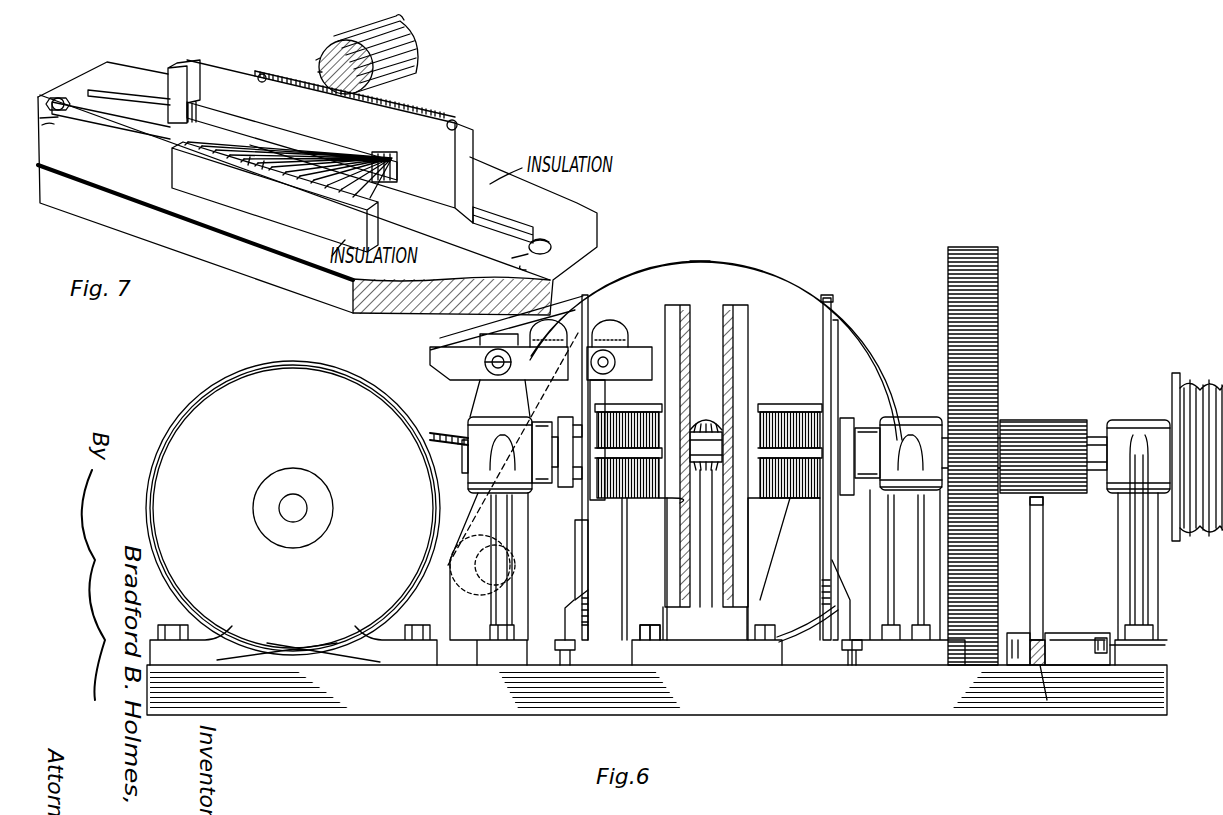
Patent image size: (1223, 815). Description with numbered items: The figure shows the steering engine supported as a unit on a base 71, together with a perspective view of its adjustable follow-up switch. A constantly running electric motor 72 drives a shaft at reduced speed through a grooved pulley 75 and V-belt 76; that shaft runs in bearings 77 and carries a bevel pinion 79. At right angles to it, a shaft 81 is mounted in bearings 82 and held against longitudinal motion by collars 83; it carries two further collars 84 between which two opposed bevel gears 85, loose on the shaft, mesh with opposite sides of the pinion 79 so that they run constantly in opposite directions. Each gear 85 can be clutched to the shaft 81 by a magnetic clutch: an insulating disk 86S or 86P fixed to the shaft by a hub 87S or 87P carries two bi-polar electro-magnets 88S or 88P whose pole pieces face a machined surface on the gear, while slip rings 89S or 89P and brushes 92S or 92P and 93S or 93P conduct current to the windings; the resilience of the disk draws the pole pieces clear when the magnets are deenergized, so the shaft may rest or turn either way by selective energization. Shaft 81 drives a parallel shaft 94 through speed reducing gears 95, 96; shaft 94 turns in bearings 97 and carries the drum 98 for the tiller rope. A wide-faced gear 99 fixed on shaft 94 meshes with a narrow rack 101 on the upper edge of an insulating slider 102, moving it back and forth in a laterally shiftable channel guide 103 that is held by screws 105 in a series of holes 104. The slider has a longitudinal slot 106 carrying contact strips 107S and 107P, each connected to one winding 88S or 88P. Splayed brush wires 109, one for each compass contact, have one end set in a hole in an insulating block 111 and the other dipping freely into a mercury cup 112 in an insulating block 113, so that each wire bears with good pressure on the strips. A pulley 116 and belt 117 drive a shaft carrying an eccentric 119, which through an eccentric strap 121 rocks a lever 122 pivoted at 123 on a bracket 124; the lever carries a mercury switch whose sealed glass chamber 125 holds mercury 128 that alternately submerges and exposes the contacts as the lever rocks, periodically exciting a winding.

In FIG. 6, the base 71 is at (398, 716).
In FIG. 6, the electric motor 72 is at (225, 392).
In FIG. 6, the grooved pulley 75 is at (782, 280).
In FIG. 6, the V-belt 76 is at (715, 263).
In FIG. 6, the bearings 77 is at (728, 665).
In FIG. 6, the bevel pinion 79 is at (706, 420).
In FIG. 6, the shaft 81 is at (706, 515).
In FIG. 6, the bearings 82 is at (488, 452).
In FIG. 6, the collars 83 is at (543, 424).
In FIG. 6, the collars 84 is at (610, 498).
In FIG. 6, the bevel gears 85 is at (726, 330).
In FIG. 6, the insulating disk 86S is at (586, 624).
In FIG. 6, the insulating disk 86P is at (820, 594).
In FIG. 6, the hub 87S is at (568, 482).
In FIG. 6, the hub 87P is at (830, 505).
In FIG. 6, the bi-polar electro-magnets 88S is at (660, 503).
In FIG. 6, the bi-polar electro-magnets 88P is at (780, 420).
In FIG. 6, the slip ring 89S is at (578, 540).
In FIG. 6, the slip ring 89P is at (838, 330).
In FIG. 6, the brush 92S is at (563, 626).
In FIG. 6, the brush 92P is at (843, 652).
In FIG. 6, the brush 93S is at (568, 583).
In FIG. 6, the brush 93P is at (830, 565).
In FIG. 7, the shaft 94 is at (320, 65).
In FIG. 6, the shaft 94 is at (1097, 432).
In FIG. 6, the speed reducing gear 95 is at (985, 415).
In FIG. 6, the speed reducing gear 96 is at (998, 278).
In FIG. 6, the bearings 97 is at (878, 665).
In FIG. 6, the spool or drum 98 is at (1192, 385).
In FIG. 7, the gear 99 is at (418, 55).
In FIG. 6, the gear 99 is at (1066, 420).
In FIG. 7, the rack 101 is at (418, 110).
In FIG. 6, the rack 101 is at (1030, 500).
In FIG. 7, the slider 102 is at (473, 138).
In FIG. 6, the slider 102 is at (1045, 545).
In FIG. 7, the channel guide member 103 is at (498, 225).
In FIG. 6, the channel guide member 103 is at (1047, 700).
In FIG. 7, the holes 104 is at (62, 126).
In FIG. 7, the screws 105 is at (55, 98).
In FIG. 6, the screws 105 is at (1038, 640).
In FIG. 7, the longitudinal slot or aperture 106 is at (192, 82).
In FIG. 7, the longitudinal contact strip 107P is at (180, 136).
In FIG. 7, the longitudinal contact strip 107S is at (398, 174).
In FIG. 7, the brush wires 109 is at (338, 196).
In FIG. 6, the brush wires 109 is at (1075, 633).
In FIG. 7, the insulating block 111 is at (388, 152).
In FIG. 6, the insulating block 111 is at (1010, 634).
In FIG. 7, the mercury cup 112 is at (262, 172).
In FIG. 6, the mercury cup 112 is at (1077, 649).
In FIG. 7, the insulating block 113 is at (208, 192).
In FIG. 6, the insulating block 113 is at (1160, 648).
In FIG. 6, the pulley 116 is at (442, 434).
In FIG. 6, the belt 117 is at (462, 440).
In FIG. 6, the eccentric 119 is at (472, 580).
In FIG. 6, the eccentric strap 121 is at (500, 383).
In FIG. 6, the lever 122 is at (440, 348).
In FIG. 6, the pivot 123 is at (616, 362).
In FIG. 6, the bracket 124 is at (607, 392).
In FIG. 6, the sealed glass chamber 125 is at (558, 322).
In FIG. 6, the mercury 128 is at (625, 325).